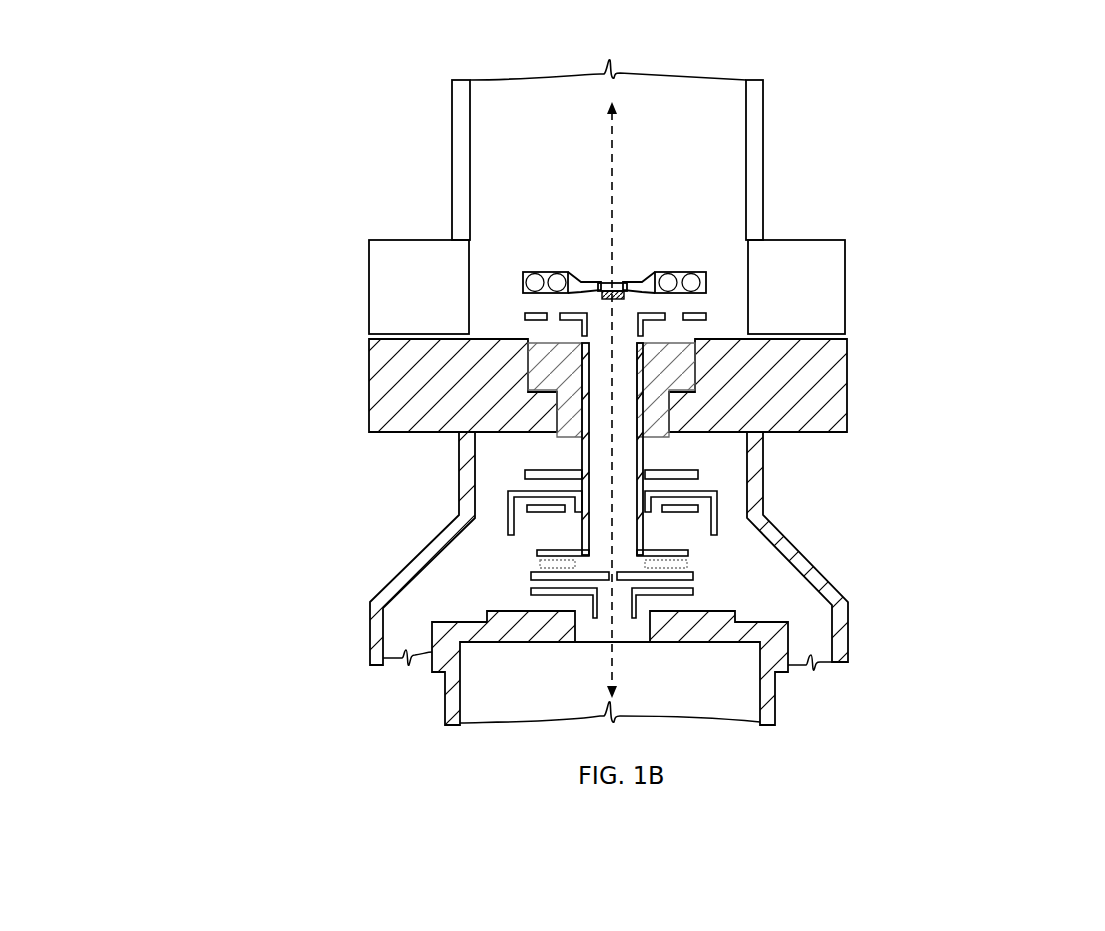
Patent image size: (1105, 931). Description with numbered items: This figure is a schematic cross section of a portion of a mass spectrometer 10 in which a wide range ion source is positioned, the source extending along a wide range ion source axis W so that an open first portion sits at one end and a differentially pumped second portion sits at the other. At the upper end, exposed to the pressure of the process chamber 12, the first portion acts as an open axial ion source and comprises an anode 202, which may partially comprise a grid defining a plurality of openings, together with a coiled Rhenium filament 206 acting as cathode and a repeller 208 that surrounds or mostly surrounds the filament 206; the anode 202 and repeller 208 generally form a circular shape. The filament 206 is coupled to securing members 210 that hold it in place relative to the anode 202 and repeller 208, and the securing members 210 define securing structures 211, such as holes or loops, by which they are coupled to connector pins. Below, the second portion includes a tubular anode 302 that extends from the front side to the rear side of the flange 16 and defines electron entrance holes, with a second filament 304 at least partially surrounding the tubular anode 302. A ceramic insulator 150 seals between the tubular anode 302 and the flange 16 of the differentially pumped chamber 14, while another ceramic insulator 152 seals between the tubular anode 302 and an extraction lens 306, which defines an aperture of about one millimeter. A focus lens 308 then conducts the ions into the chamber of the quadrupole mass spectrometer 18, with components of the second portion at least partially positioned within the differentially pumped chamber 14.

The mass spectrometer 10 is at (262, 151).
The process chamber 12 is at (636, 139).
The wide range ion source axis W is at (611, 150).
The securing members 210 is at (548, 271).
The securing structures 211 is at (677, 272).
The repeller 208 is at (600, 296).
The filament 206 is at (616, 287).
The anode 202 is at (560, 314).
The flange 16 is at (810, 407).
The ceramic insulator 150 is at (678, 380).
The tubular anode 302 is at (580, 448).
The second filament 304 is at (619, 507).
The ceramic insulator 152 is at (700, 552).
The differentially pumped chamber 14 is at (462, 600).
The extraction lens 306 is at (680, 574).
The focus lens 308 is at (700, 597).
The quadrupole mass spectrometer 18 is at (741, 683).